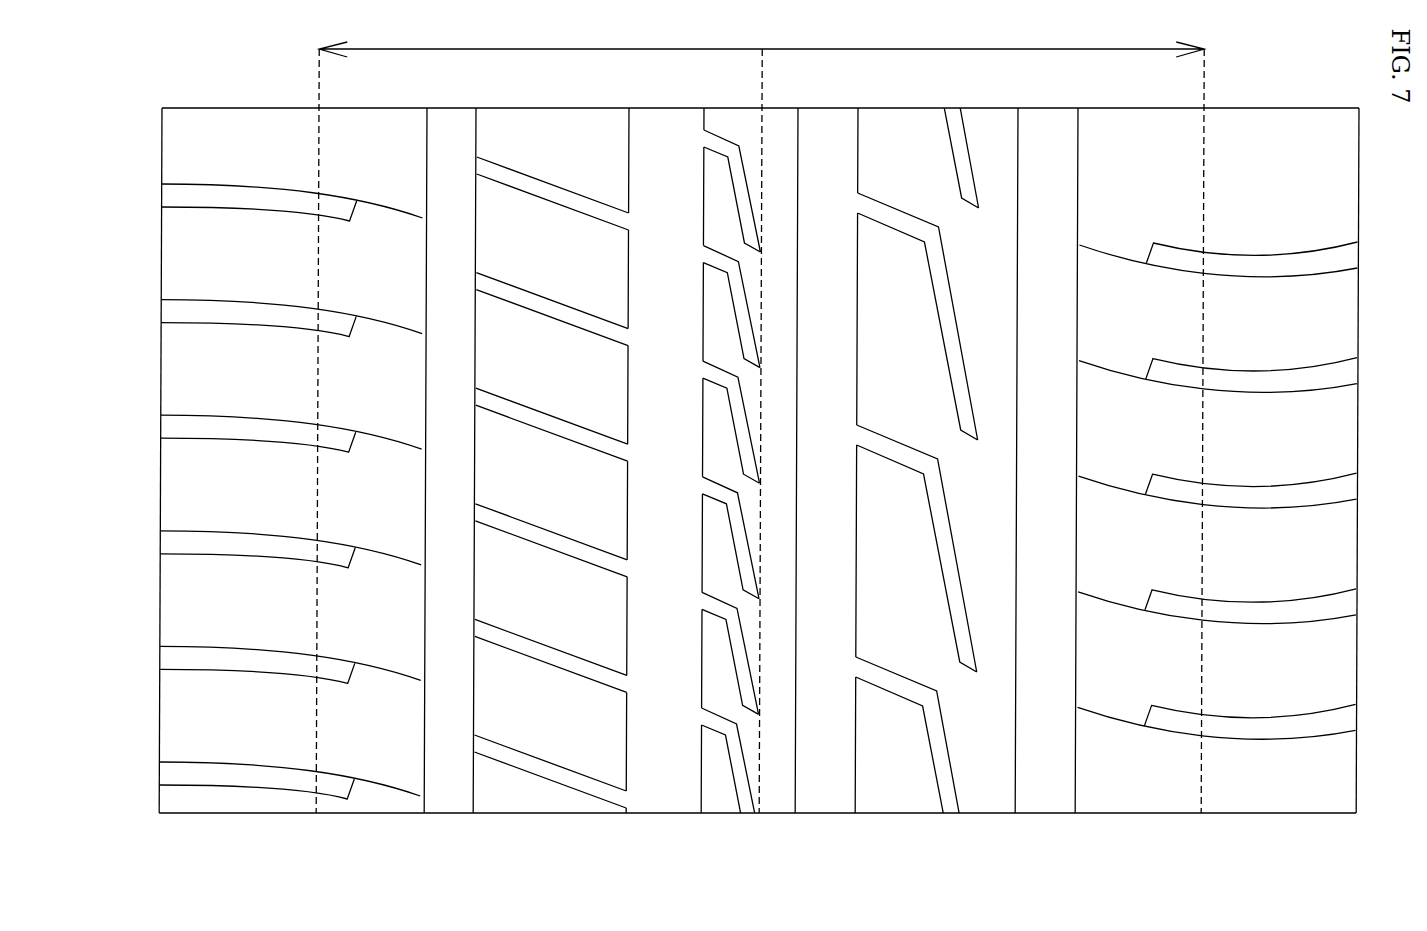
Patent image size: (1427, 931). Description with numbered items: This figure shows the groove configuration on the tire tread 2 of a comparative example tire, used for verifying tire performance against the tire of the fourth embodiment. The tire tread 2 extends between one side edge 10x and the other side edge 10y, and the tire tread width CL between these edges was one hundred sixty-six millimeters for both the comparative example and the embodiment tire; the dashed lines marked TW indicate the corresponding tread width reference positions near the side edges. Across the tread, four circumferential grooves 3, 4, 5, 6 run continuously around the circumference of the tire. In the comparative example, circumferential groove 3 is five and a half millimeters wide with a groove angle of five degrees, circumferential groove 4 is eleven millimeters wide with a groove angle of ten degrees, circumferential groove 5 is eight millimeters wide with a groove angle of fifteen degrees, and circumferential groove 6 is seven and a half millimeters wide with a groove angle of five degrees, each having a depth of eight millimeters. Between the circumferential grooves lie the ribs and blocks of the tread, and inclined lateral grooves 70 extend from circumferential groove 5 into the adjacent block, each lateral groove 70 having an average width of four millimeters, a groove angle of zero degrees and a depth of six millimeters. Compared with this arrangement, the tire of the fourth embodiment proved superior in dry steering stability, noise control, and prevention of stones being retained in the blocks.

The tire tread 2 is at (919, 452).
The circumferential groove 3 is at (445, 797).
The circumferential groove 4 is at (657, 790).
The circumferential groove 5 is at (807, 800).
The circumferential groove 6 is at (1028, 777).
The lateral groove 70 is at (937, 456).
The one side edge 10x is at (1359, 298).
The other side edge 10y is at (163, 223).
The tread width TW is at (1258, 143).
The tire tread width CL is at (838, 48).